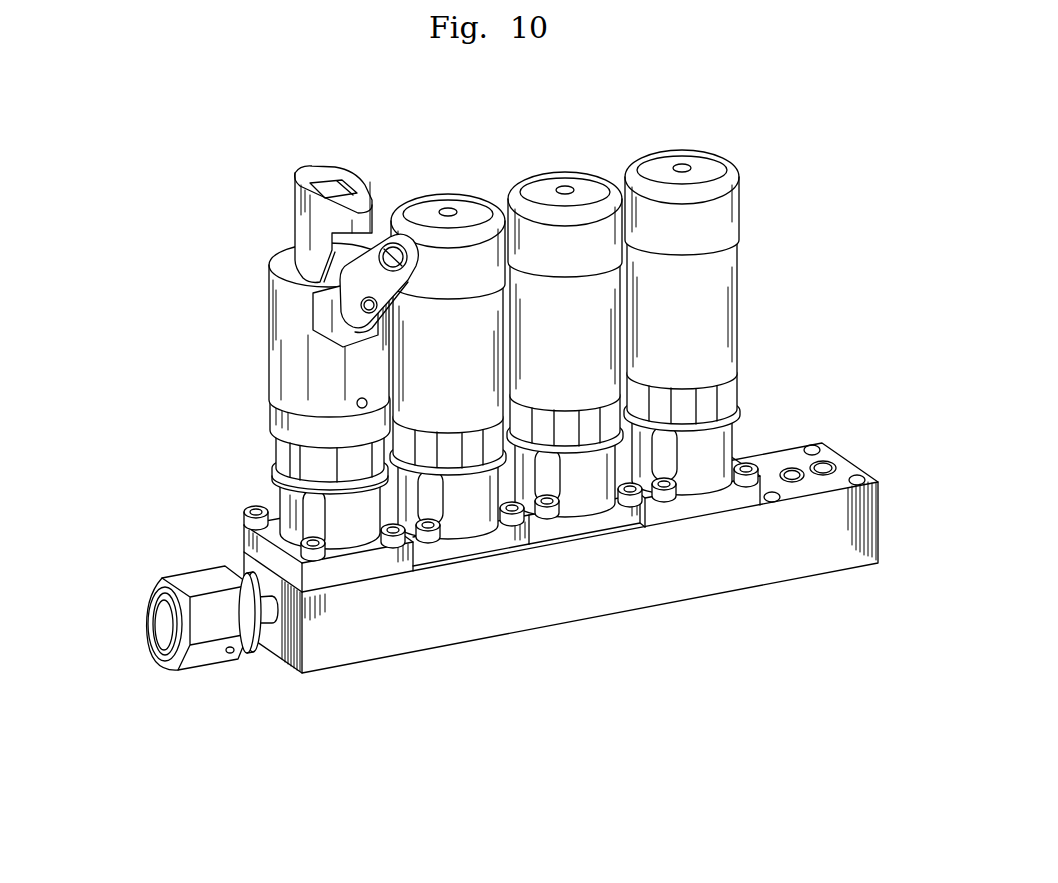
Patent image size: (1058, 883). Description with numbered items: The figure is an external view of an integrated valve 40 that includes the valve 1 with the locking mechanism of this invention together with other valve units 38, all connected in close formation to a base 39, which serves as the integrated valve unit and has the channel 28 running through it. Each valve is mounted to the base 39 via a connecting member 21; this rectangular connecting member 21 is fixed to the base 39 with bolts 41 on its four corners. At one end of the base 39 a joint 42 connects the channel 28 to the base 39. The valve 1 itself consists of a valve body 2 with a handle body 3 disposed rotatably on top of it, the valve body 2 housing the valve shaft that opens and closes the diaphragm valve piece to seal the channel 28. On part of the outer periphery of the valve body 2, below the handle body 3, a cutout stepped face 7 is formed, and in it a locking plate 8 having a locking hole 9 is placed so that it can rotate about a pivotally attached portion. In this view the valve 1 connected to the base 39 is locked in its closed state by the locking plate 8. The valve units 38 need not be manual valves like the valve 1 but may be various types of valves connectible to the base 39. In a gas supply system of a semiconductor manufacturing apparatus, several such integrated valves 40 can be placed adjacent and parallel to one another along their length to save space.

The valve 1 is at (258, 287).
The valve body 2 is at (260, 411).
The handle body 3 is at (284, 204).
The cutout stepped face 7 is at (328, 323).
The locking plate 8 is at (338, 297).
The locking hole 9 is at (393, 245).
The connecting member 21 is at (265, 547).
The channel 28 is at (172, 628).
The valve unit 38 is at (475, 205).
The base 39 is at (770, 557).
The integrated valve 40 is at (816, 339).
The bolt 41 is at (247, 514).
The joint 42 is at (200, 661).